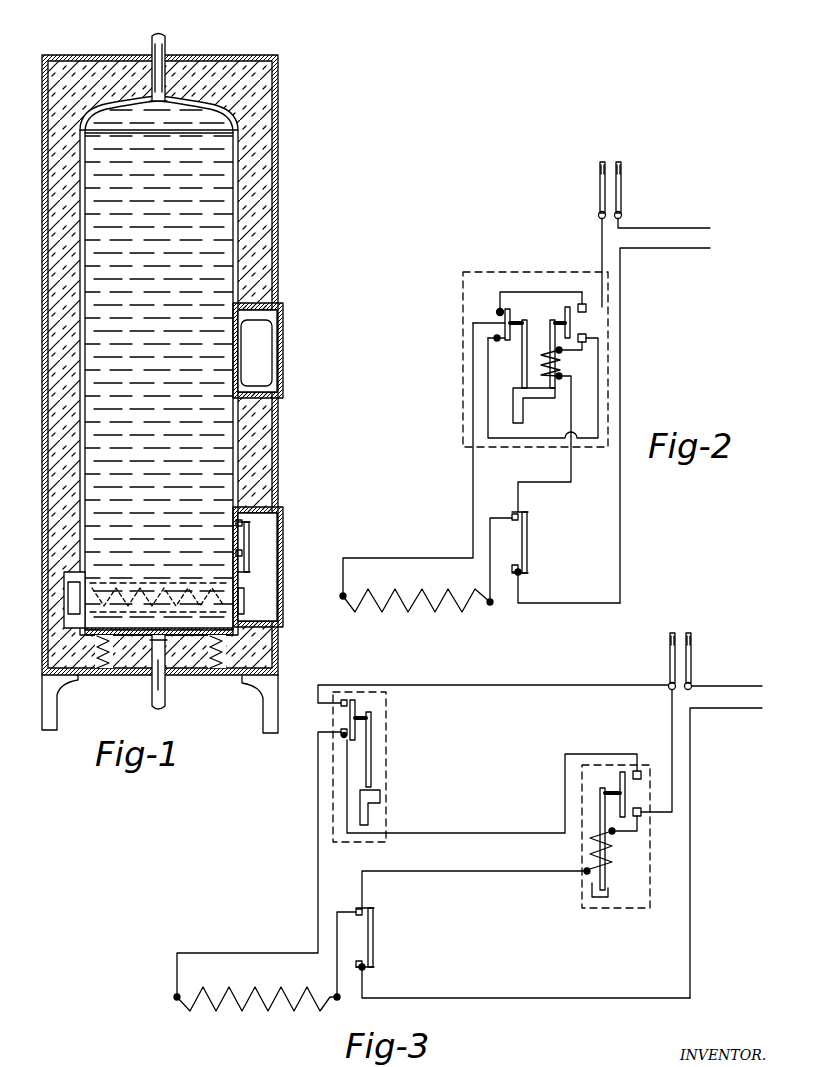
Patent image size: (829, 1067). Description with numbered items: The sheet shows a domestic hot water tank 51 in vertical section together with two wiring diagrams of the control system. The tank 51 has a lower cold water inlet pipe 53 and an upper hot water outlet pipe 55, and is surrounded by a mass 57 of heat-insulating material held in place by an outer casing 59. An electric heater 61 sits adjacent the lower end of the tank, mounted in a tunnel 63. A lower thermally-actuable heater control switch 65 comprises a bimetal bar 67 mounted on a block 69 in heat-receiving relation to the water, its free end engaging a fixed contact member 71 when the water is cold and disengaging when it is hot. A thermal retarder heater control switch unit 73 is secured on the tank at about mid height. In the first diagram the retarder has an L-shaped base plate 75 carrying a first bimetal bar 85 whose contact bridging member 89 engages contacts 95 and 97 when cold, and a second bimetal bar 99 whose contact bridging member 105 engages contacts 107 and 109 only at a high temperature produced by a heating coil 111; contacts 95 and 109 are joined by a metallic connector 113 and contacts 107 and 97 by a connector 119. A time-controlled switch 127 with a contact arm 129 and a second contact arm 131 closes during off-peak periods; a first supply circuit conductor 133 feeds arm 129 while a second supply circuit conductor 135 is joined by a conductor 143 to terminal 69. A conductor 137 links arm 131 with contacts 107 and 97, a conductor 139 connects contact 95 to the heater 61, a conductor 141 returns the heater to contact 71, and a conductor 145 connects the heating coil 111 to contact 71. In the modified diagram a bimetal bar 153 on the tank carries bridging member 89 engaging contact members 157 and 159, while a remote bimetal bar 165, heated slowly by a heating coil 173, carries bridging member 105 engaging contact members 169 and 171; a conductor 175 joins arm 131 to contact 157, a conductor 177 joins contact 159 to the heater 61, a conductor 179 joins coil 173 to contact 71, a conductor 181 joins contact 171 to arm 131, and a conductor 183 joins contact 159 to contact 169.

In FIG. 1, the tank 51 is at (236, 192).
In FIG. 1, the cold water inlet pipe 53 is at (166, 682).
In FIG. 1, the hot water outlet pipe 55 is at (166, 46).
In FIG. 1, the mass of heat-insulating material 57 is at (258, 210).
In FIG. 1, the outer casing 59 is at (283, 152).
In FIG. 1, the electric heater 61 is at (156, 595).
In FIG. 2, the electric heater 61 is at (416, 612).
In FIG. 3, the electric heater 61 is at (257, 984).
In FIG. 1, the tunnel 63 is at (80, 580).
In FIG. 1, the lower thermally-actuable heater control switch 65 is at (258, 560).
In FIG. 2, the lower thermally-actuable heater control switch 65 is at (540, 530).
In FIG. 3, the lower thermally-actuable heater control switch 65 is at (389, 931).
In FIG. 1, the bimetal bar 67 is at (252, 546).
In FIG. 2, the bimetal bar 67 is at (528, 548).
In FIG. 3, the bimetal bar 67 is at (374, 946).
In FIG. 1, the block 69 is at (236, 553).
In FIG. 2, the block 69 is at (510, 585).
In FIG. 3, the block 69 is at (358, 972).
In FIG. 1, the fixed contact member 71 is at (236, 523).
In FIG. 2, the fixed contact member 71 is at (514, 513).
In FIG. 3, the fixed contact member 71 is at (358, 909).
In FIG. 1, the thermal retarder heater control switch unit 73 is at (270, 341).
In FIG. 2, the thermal retarder heater control switch unit 73 is at (463, 298).
In FIG. 2, the base plate 75 is at (530, 404).
In FIG. 3, the base plate 75 is at (380, 814).
In FIG. 2, the first bimetal bar 85 is at (520, 372).
In FIG. 2, the contact bridging member 89 is at (506, 326).
In FIG. 3, the contact bridging member 89 is at (350, 718).
In FIG. 2, the contact 95 is at (498, 310).
In FIG. 2, the contact 97 is at (508, 340).
In FIG. 2, the second bimetal bar 99 is at (556, 324).
In FIG. 2, the contact bridging member 105 is at (570, 322).
In FIG. 3, the contact bridging member 105 is at (625, 792).
In FIG. 2, the contact 107 is at (590, 344).
In FIG. 2, the contact 109 is at (586, 307).
In FIG. 2, the heating coil 111 is at (562, 366).
In FIG. 2, the metallic connector 113 is at (512, 290).
In FIG. 2, the connector 119 is at (546, 446).
In FIG. 2, the time-controlled switch 127 is at (628, 168).
In FIG. 3, the time-controlled switch 127 is at (695, 641).
In FIG. 2, the contact arm 129 is at (622, 184).
In FIG. 3, the contact arm 129 is at (692, 654).
In FIG. 2, the second contact arm 131 is at (600, 198).
In FIG. 3, the second contact arm 131 is at (670, 658).
In FIG. 2, the first supply circuit conductor 133 is at (696, 228).
In FIG. 3, the first supply circuit conductor 133 is at (752, 685).
In FIG. 2, the second supply circuit conductor 135 is at (696, 248).
In FIG. 3, the second supply circuit conductor 135 is at (752, 708).
In FIG. 2, the conductor 137 is at (600, 240).
In FIG. 2, the conductor 139 is at (473, 512).
In FIG. 2, the conductor 141 is at (490, 572).
In FIG. 3, the conductor 141 is at (337, 962).
In FIG. 2, the conductor 143 is at (569, 602).
In FIG. 3, the conductor 143 is at (690, 874).
In FIG. 2, the conductor 145 is at (572, 468).
In FIG. 3, the bimetal bar 153 is at (372, 762).
In FIG. 3, the contact member 157 is at (344, 700).
In FIG. 3, the contact member 159 is at (344, 738).
In FIG. 3, the bimetal bar 165 is at (598, 820).
In FIG. 3, the contact member 169 is at (641, 776).
In FIG. 3, the contact member 171 is at (643, 818).
In FIG. 3, the heating coil 173 is at (606, 855).
In FIG. 3, the conductor 175 is at (548, 685).
In FIG. 3, the conductor 177 is at (318, 858).
In FIG. 3, the conductor 179 is at (484, 871).
In FIG. 3, the conductor 181 is at (672, 714).
In FIG. 3, the conductor 183 is at (494, 826).